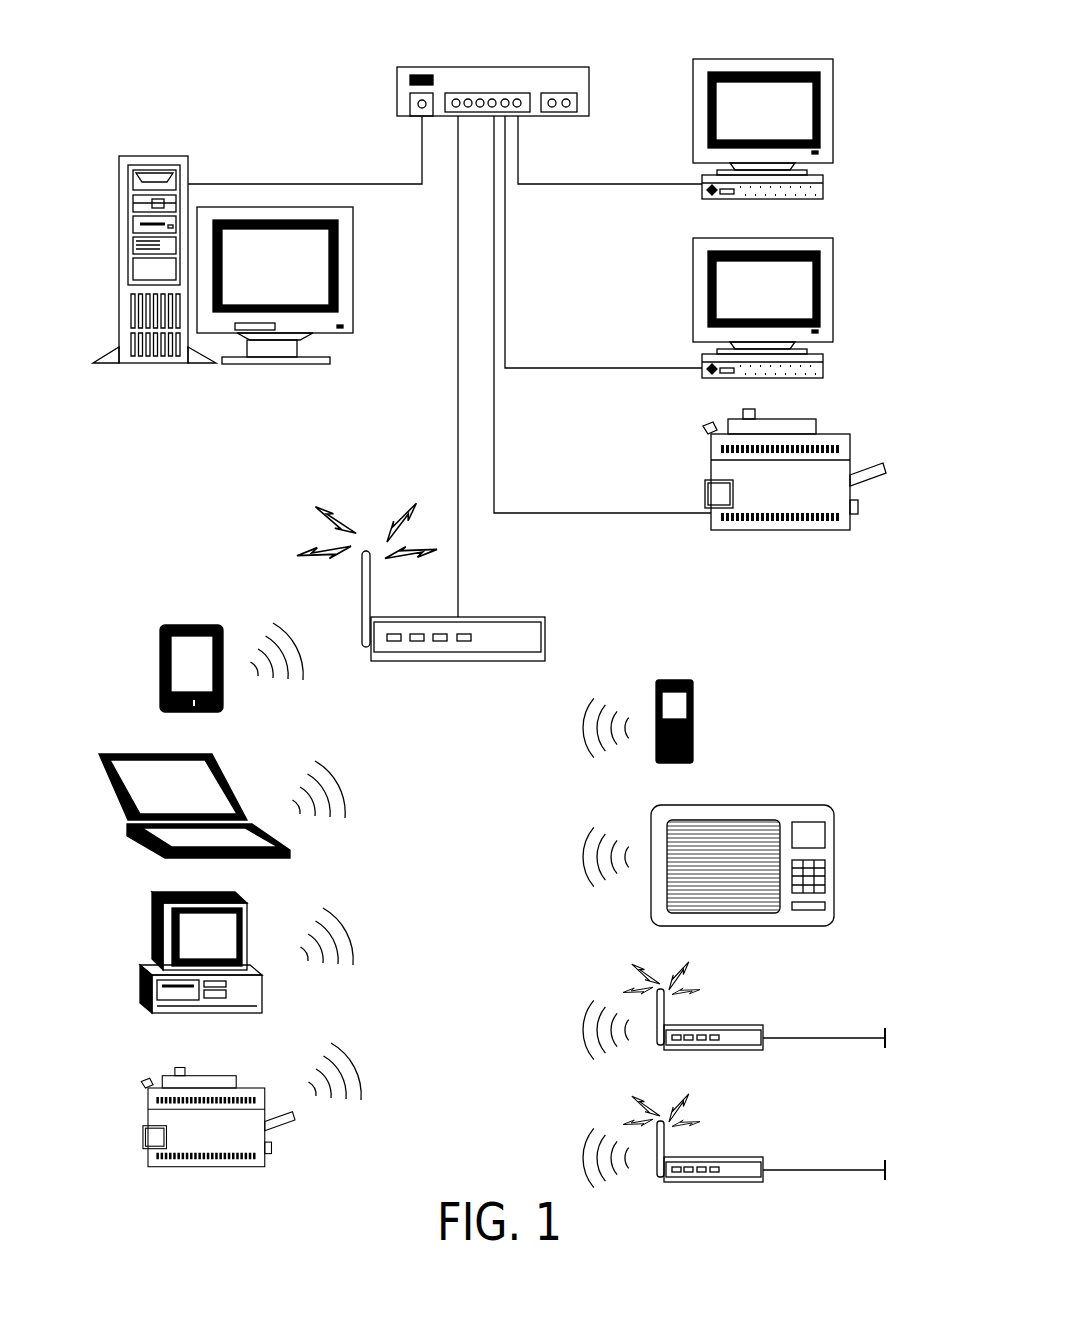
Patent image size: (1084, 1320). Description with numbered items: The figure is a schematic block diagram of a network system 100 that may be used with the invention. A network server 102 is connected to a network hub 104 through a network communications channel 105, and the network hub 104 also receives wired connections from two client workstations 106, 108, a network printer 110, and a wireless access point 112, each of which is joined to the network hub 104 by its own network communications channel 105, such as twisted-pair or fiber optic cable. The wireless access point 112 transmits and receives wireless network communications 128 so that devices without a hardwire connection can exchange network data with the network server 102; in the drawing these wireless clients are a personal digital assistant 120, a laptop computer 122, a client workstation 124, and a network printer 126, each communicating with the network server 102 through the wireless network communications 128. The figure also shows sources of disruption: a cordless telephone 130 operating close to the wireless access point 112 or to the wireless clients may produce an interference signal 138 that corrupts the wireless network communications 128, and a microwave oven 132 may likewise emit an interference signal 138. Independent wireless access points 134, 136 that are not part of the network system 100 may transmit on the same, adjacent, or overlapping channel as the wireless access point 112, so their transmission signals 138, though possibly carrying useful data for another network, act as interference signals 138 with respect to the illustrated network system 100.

The network system 100 is at (866, 57).
The network server 102 is at (118, 174).
The network hub 104 is at (397, 91).
The network communications channel 105 is at (422, 178).
The client workstation 106 is at (834, 150).
The client workstation 108 is at (834, 328).
The network printer 110 is at (852, 447).
The wireless access point 112 is at (546, 635).
The personal digital assistant 120 is at (160, 658).
The laptop computer 122 is at (110, 778).
The client workstation 124 is at (140, 985).
The network printer 126 is at (148, 1118).
The wireless network communications 128 is at (295, 672).
The cordless telephone 130 is at (694, 712).
The microwave oven 132 is at (834, 895).
The independent wireless access point 134 is at (764, 1032).
The independent wireless access point 136 is at (764, 1164).
The interference signal 138 is at (600, 752).